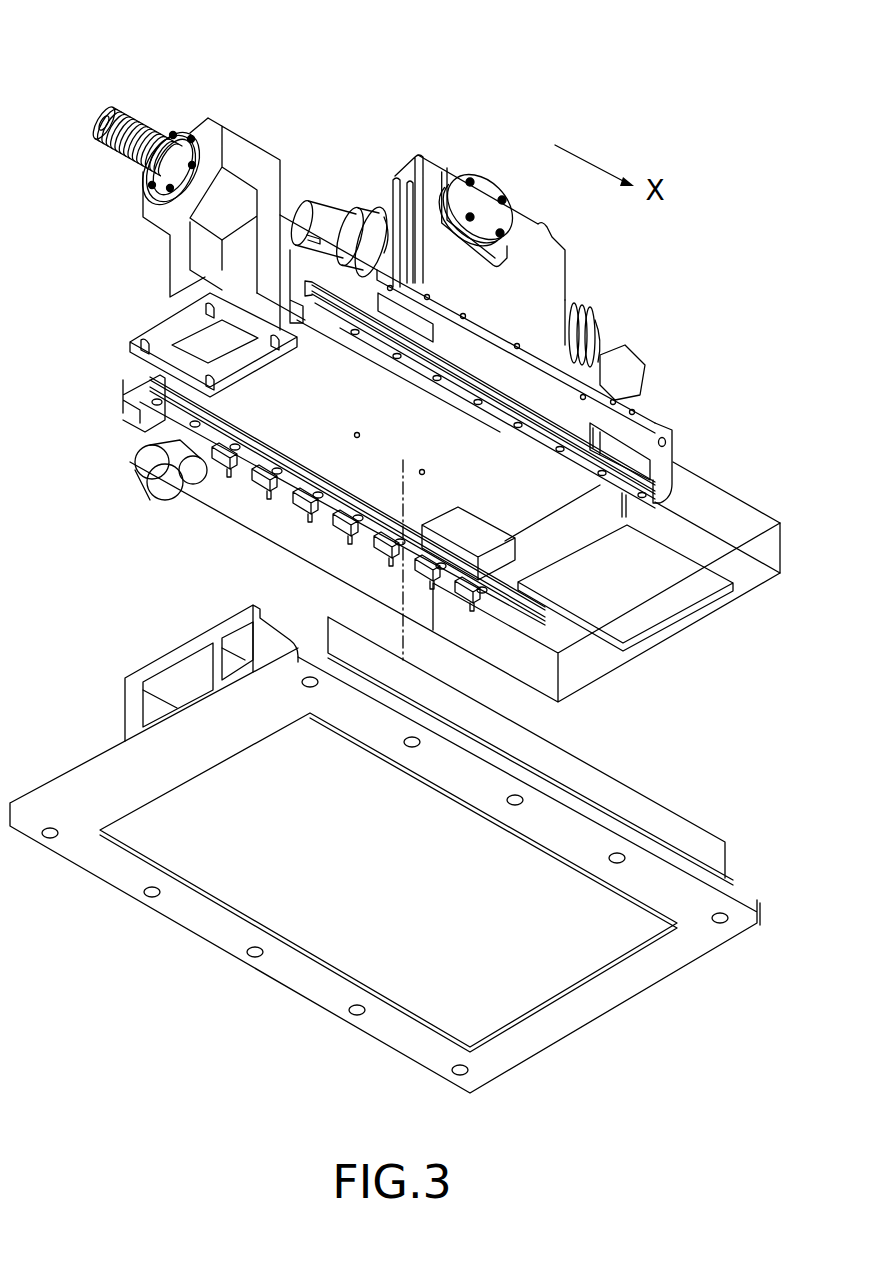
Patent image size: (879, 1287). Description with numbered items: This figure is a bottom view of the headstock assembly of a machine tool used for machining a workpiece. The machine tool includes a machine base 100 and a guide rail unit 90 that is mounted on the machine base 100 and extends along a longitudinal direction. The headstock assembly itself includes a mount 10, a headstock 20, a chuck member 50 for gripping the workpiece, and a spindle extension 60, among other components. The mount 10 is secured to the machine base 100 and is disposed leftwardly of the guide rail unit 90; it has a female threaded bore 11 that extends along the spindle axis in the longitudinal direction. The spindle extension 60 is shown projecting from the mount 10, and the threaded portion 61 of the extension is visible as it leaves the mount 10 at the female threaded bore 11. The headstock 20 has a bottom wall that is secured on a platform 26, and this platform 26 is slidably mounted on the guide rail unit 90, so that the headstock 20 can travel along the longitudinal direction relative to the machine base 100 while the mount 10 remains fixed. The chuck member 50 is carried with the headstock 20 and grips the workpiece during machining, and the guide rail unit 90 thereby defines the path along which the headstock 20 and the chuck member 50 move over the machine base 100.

The mount 10 is at (255, 158).
The female threaded bore 11 is at (181, 147).
The headstock 20 is at (485, 150).
The platform 26 is at (393, 178).
The chuck member 50 is at (620, 380).
The spindle extension 60 is at (123, 95).
The threaded portion 61 is at (138, 128).
The guide rail unit 90 is at (673, 458).
The machine base 100 is at (744, 893).